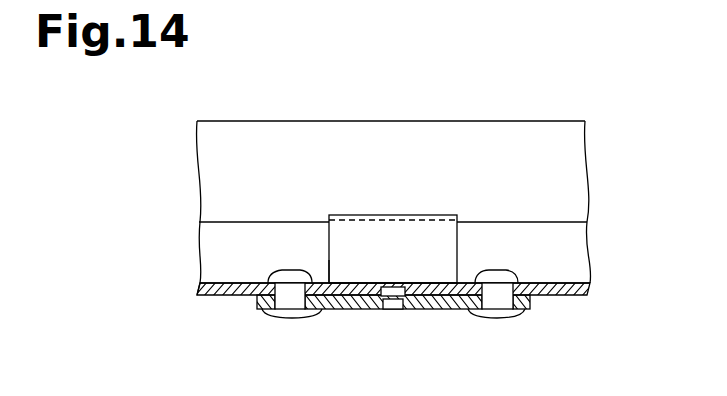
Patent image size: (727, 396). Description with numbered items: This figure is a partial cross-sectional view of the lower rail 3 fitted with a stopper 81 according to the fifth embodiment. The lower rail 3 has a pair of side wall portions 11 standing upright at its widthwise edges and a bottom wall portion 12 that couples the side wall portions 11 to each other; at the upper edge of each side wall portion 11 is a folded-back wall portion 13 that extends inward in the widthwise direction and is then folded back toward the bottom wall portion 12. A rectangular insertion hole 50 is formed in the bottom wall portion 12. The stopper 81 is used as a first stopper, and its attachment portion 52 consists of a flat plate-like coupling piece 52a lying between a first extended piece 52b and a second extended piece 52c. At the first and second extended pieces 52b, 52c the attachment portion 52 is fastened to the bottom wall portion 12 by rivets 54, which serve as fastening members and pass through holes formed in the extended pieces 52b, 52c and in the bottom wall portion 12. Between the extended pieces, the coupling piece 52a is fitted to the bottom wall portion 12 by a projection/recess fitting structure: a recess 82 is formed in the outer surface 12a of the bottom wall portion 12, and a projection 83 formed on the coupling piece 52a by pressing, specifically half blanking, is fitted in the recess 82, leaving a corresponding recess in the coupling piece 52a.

The lower rail 3 is at (556, 119).
The folded-back wall portion 13 is at (583, 178).
The side wall portion 11 is at (585, 255).
The bottom wall portion 12 is at (590, 290).
The outer surface of the bottom wall portion 12a is at (208, 297).
The stopper 81 is at (352, 211).
The projection 83 is at (393, 291).
The recess 82 is at (394, 301).
The insertion hole 50 is at (328, 279).
The attachment portion 52 is at (455, 309).
The coupling piece 52a is at (352, 310).
The first extended piece 52b is at (260, 309).
The second extended piece 52c is at (528, 304).
The rivet 54 is at (292, 317).